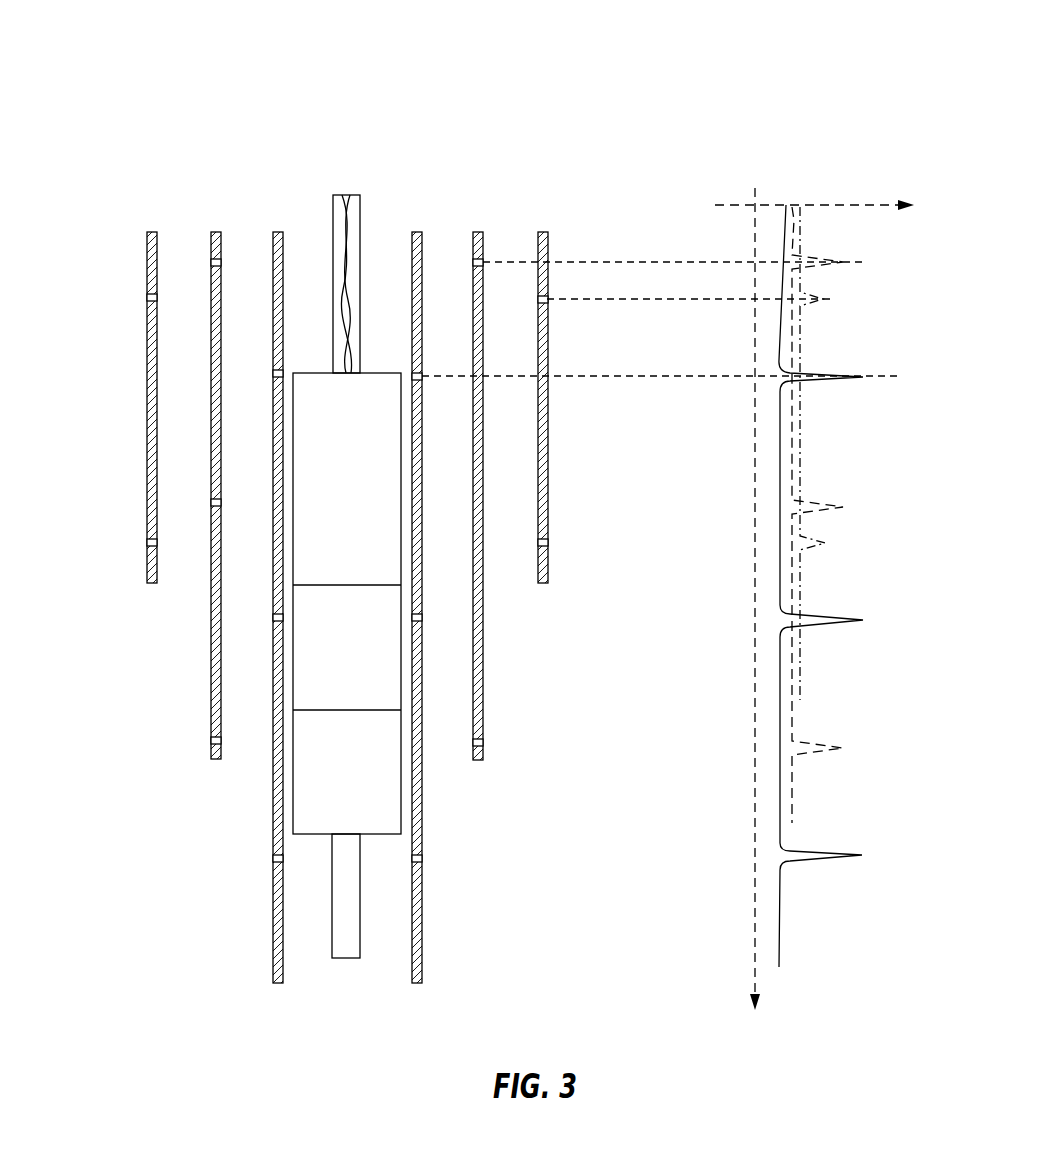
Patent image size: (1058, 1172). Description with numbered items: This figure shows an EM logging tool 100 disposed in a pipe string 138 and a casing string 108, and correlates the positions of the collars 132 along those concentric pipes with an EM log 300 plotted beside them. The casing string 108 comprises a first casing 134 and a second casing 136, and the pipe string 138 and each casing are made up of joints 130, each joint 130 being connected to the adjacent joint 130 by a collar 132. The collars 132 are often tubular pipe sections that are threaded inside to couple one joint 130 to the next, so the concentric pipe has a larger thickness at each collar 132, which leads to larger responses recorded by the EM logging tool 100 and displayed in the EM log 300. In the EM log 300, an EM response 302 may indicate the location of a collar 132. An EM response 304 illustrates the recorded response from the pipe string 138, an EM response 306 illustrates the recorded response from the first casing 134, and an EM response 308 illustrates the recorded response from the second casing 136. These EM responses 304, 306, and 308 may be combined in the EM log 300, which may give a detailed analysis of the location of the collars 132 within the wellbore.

The casing string 108 is at (130, 163).
The EM logging tool 100 is at (360, 215).
The joint 130 is at (147, 516).
The collar 132 is at (140, 542).
The first casing 134 is at (483, 762).
The second casing 136 is at (545, 585).
The pipe string 138 is at (426, 1003).
The EM log 300 is at (870, 95).
The EM response 302 is at (850, 375).
The EM response 304 is at (782, 929).
The EM response 306 is at (790, 717).
The EM response 308 is at (800, 577).